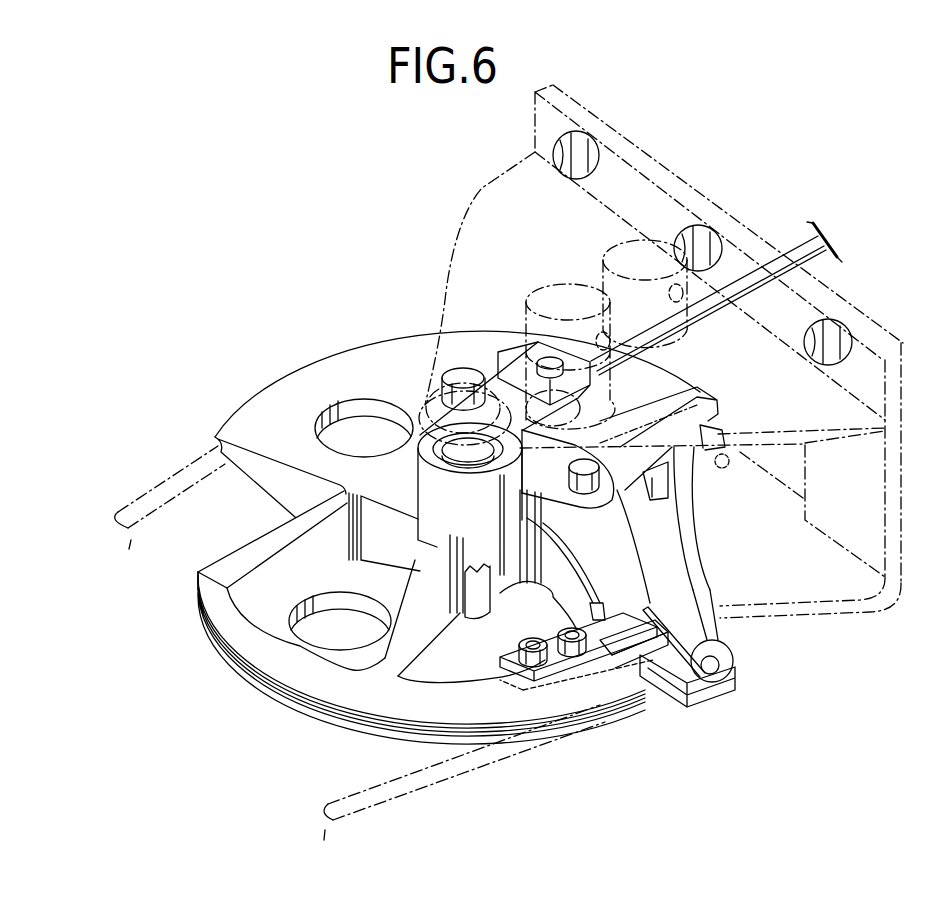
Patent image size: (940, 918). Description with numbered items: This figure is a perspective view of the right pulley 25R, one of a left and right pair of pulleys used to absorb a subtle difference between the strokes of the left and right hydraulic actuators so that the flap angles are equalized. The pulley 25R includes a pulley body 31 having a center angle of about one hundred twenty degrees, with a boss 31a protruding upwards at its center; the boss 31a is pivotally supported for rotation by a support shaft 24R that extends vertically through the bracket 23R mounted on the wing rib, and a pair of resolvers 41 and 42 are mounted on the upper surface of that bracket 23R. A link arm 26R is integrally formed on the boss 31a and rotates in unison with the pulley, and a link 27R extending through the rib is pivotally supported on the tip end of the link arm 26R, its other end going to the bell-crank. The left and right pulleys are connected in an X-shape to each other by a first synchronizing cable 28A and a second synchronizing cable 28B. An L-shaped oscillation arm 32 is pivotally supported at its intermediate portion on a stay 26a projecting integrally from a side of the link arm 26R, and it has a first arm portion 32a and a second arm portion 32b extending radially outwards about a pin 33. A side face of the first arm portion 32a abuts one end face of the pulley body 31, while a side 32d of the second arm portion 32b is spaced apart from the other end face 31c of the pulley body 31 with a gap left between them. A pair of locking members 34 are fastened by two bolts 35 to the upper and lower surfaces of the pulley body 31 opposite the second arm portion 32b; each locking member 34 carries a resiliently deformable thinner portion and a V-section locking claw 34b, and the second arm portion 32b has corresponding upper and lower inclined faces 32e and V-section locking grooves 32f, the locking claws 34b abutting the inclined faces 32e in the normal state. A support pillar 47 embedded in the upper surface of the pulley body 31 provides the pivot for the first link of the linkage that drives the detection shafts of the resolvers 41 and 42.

The bracket 23R is at (481, 207).
The support shaft 24R is at (463, 370).
The pulley 25R is at (287, 355).
The link arm 26R is at (540, 352).
The stay 26a is at (587, 423).
The link 27R is at (797, 248).
The first synchronizing cable 28A is at (370, 790).
The second synchronizing cable 28B is at (155, 484).
The pulley body 31 is at (341, 348).
The boss 31a is at (420, 481).
The end face 31c is at (648, 672).
The oscillation arm 32 is at (688, 541).
The first arm portion 32a is at (707, 397).
The second arm portion 32b is at (700, 606).
The side 32d is at (663, 657).
The inclined face 32e is at (630, 660).
The locking groove 32f is at (730, 692).
The pin 33 is at (622, 490).
The locking member 34 is at (586, 676).
The locking claw 34b is at (645, 630).
The bolt 35 is at (570, 627).
The resolver 41 is at (562, 290).
The resolver 42 is at (628, 250).
The support pillar 47 is at (464, 580).